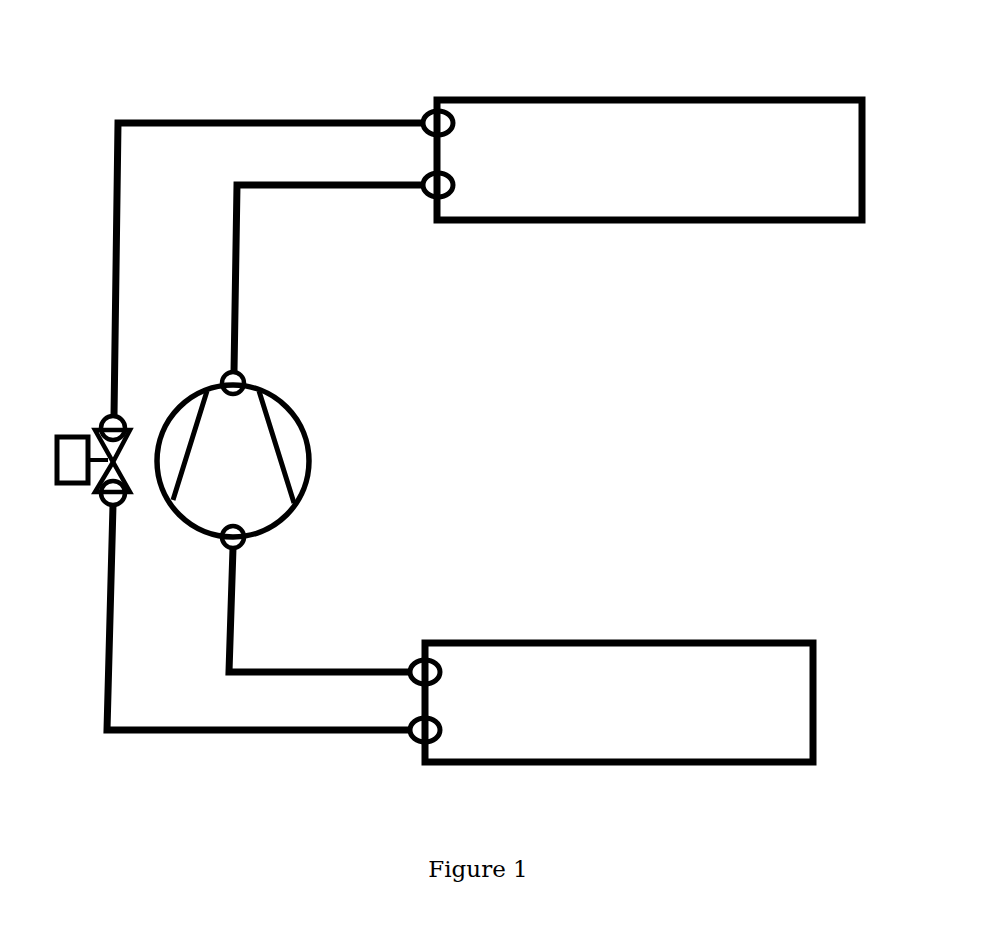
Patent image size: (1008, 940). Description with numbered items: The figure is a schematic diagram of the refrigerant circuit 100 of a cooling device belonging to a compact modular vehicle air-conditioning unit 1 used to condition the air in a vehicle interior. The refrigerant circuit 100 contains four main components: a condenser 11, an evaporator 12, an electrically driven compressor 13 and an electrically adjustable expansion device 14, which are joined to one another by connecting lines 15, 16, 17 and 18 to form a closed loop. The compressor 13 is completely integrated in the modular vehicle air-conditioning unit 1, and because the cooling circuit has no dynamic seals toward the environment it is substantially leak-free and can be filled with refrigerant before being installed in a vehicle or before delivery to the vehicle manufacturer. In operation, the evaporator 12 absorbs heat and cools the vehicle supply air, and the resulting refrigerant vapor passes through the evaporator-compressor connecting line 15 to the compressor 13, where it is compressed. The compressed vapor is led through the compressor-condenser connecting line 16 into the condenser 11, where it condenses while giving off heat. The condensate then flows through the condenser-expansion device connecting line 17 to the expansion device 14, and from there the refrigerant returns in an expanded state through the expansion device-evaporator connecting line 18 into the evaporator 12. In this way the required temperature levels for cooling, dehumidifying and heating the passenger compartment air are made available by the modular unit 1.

The vehicle air-conditioning unit 1 is at (839, 98).
The refrigerant circuit 100 is at (722, 453).
The condenser 11 is at (726, 222).
The evaporator 12 is at (712, 764).
The electrically driven compressor 13 is at (311, 450).
The electrically adjustable expansion device 14 is at (100, 437).
The evaporator-compressor connecting line 15 is at (232, 623).
The compressor-condenser connecting line 16 is at (238, 258).
The condenser-expansion device connecting line 17 is at (290, 122).
The expansion device-evaporator connecting line 18 is at (203, 732).